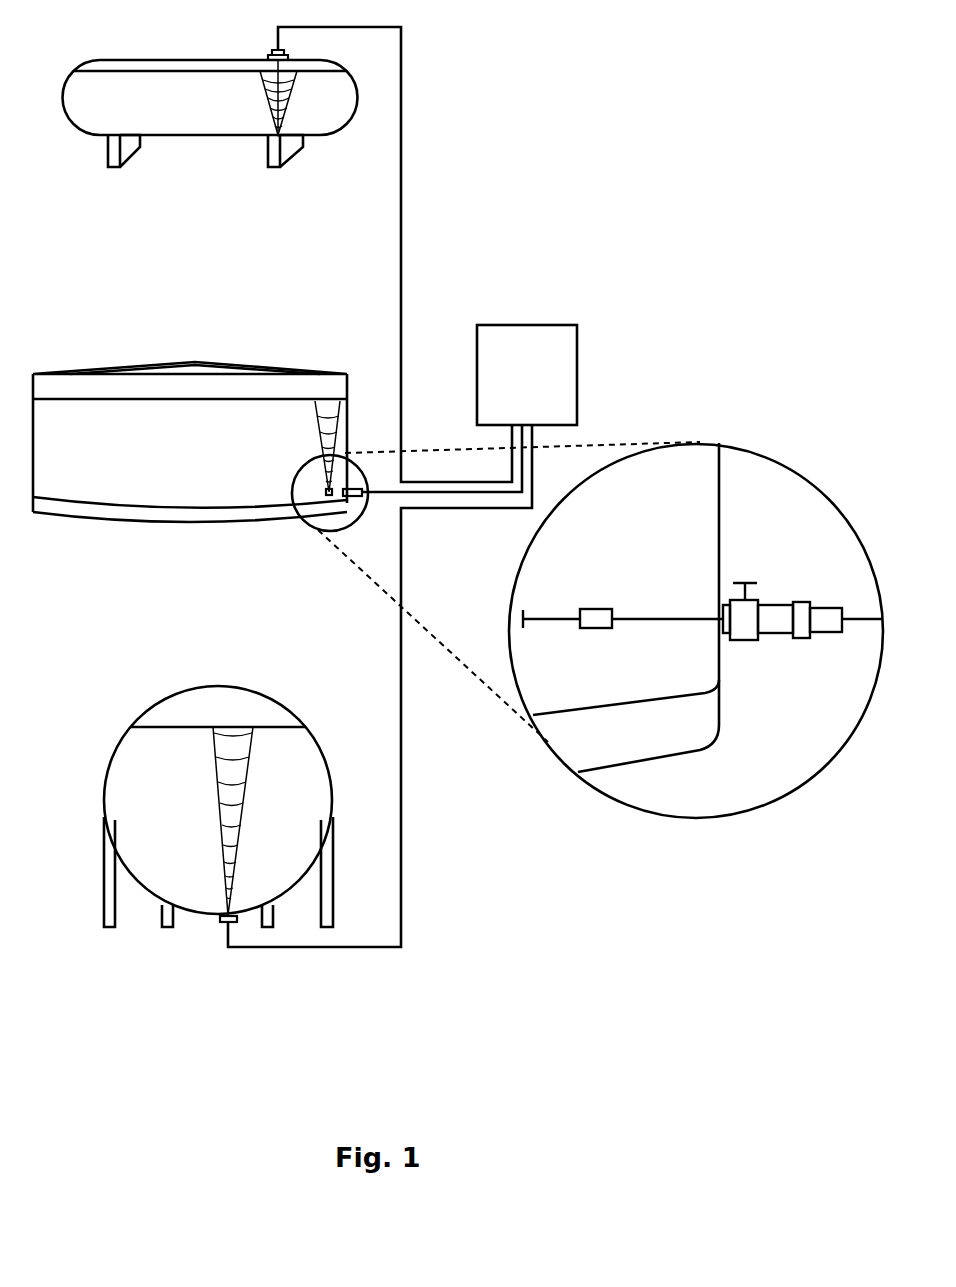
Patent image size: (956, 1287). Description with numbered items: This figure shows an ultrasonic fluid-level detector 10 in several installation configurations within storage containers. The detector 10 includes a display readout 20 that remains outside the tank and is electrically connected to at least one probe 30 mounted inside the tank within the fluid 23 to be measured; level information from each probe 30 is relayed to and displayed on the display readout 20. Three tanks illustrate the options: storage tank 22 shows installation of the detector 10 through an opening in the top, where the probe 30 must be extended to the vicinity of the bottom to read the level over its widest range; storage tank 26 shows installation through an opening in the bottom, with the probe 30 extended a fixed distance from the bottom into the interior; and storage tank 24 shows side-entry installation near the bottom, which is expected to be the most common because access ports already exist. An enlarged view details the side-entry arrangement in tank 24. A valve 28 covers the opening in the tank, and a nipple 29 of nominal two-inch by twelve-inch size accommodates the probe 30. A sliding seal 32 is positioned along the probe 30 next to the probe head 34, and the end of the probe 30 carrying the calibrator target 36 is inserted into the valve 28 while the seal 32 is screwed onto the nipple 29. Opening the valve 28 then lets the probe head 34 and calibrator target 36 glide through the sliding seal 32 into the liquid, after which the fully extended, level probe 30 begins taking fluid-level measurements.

The ultrasonic fluid-level detector 10 is at (275, 50).
The display readout 20 is at (518, 325).
The storage tank 22 is at (140, 60).
The fluid 23 is at (667, 529).
The storage tank 24 is at (105, 368).
The storage tank 26 is at (120, 740).
The valve 28 is at (757, 597).
The nipple 29 is at (778, 638).
The probe 30 is at (630, 618).
The sliding seal 32 is at (820, 636).
The probe head 34 is at (596, 608).
The calibrator target 36 is at (524, 628).